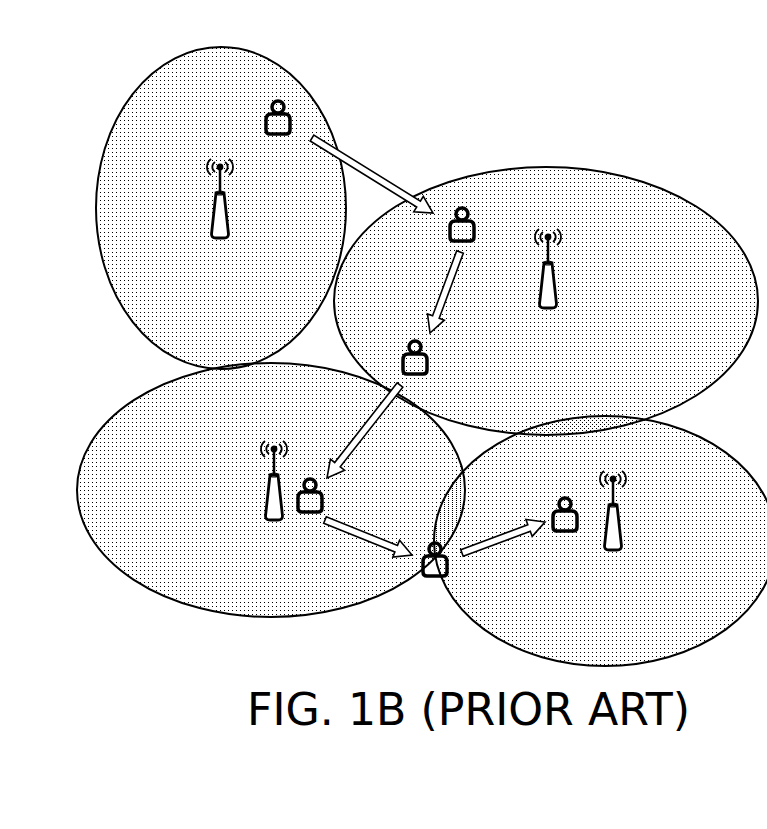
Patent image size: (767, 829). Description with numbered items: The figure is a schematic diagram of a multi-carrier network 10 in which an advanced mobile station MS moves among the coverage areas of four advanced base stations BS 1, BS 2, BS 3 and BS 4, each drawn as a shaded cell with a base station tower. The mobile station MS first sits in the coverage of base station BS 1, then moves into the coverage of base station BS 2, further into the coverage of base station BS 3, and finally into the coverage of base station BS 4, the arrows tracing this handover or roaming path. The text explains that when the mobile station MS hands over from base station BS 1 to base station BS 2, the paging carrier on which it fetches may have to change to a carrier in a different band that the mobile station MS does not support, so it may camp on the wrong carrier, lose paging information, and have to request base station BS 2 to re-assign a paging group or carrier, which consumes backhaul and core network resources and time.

The multi-carrier network 10 is at (70, 92).
The advanced mobile station MS is at (296, 120).
The advanced base station BS 1 is at (221, 208).
The advanced base station BS 2 is at (546, 301).
The advanced base station BS 3 is at (271, 490).
The advanced base station BS 4 is at (600, 541).